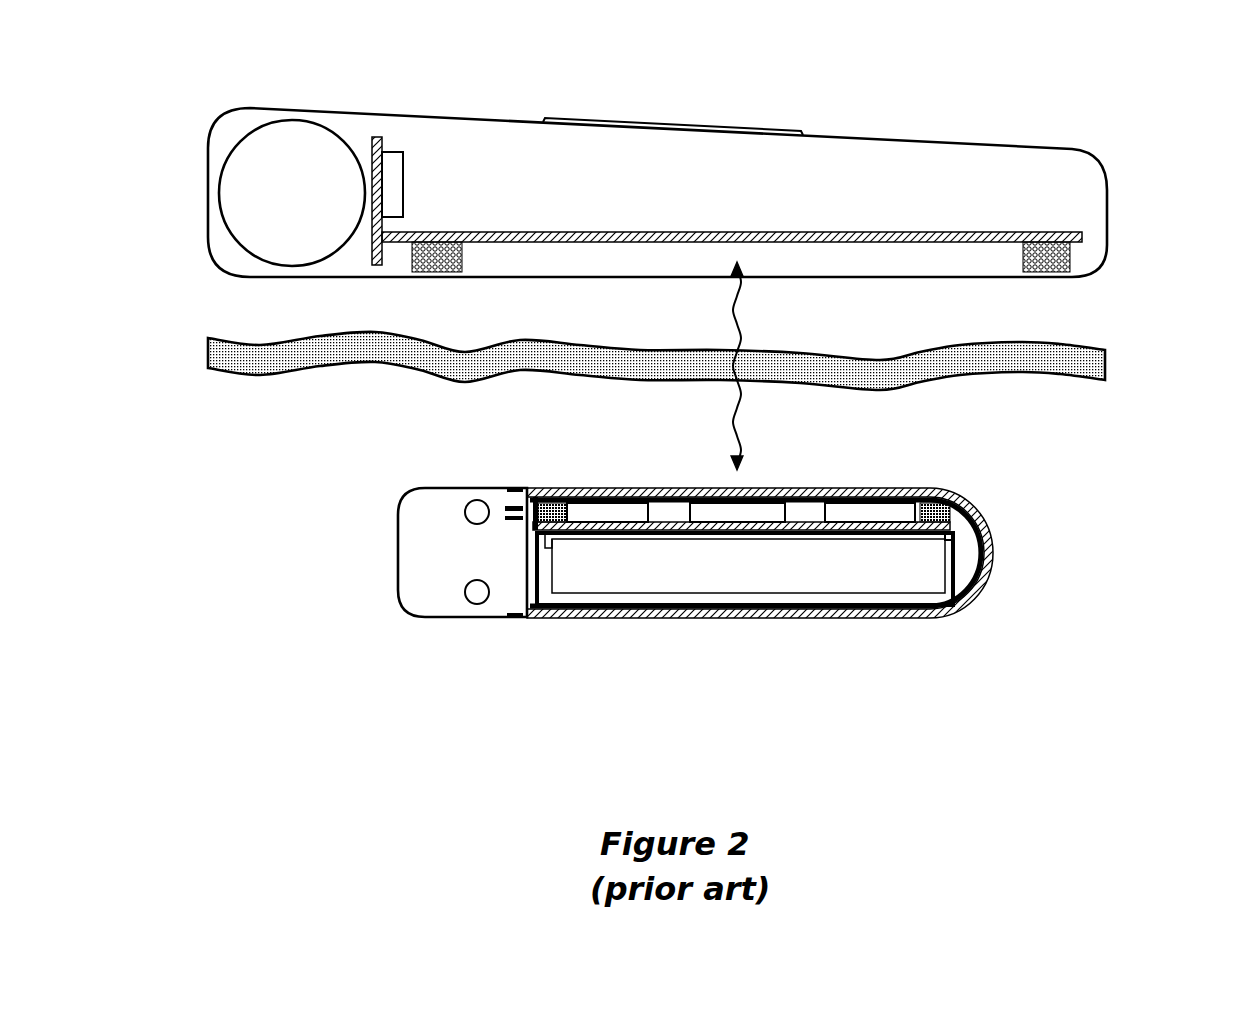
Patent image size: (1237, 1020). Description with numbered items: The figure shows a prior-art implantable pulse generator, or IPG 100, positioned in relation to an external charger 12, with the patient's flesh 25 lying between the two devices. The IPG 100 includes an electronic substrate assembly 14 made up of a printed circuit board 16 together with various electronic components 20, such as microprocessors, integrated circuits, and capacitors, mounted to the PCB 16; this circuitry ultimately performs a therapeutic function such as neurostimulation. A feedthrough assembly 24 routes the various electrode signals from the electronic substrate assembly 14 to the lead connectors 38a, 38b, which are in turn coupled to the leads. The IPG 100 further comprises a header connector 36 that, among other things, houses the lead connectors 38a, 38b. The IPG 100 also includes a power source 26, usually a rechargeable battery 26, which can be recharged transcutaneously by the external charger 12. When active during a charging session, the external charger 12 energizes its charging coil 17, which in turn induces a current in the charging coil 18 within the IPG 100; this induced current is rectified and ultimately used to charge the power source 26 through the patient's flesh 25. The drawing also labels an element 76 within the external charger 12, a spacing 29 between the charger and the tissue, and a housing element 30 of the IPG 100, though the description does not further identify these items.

The external charger 12 is at (719, 184).
The component 76 is at (404, 176).
The charging coil 17 is at (415, 273).
The gap 29 is at (742, 303).
The patient's flesh 25 is at (200, 326).
The charging coil 18 is at (543, 487).
The electronic substrate assembly 14 is at (667, 512).
The printed circuit board 16 is at (815, 520).
The electronic components 20 is at (593, 512).
The feedthrough assembly 24 is at (507, 506).
The header connector 36 is at (423, 554).
The lead connector 38a is at (474, 604).
The lead connector 38b is at (475, 524).
The housing 30 is at (985, 562).
The power source 26 is at (745, 569).
The IPG 100 is at (587, 539).